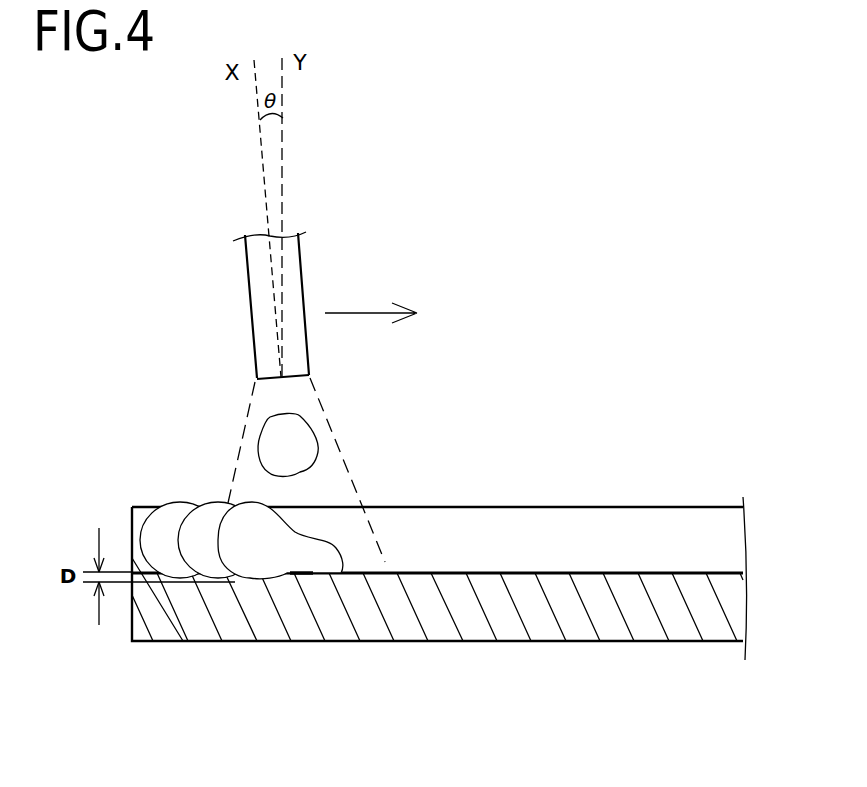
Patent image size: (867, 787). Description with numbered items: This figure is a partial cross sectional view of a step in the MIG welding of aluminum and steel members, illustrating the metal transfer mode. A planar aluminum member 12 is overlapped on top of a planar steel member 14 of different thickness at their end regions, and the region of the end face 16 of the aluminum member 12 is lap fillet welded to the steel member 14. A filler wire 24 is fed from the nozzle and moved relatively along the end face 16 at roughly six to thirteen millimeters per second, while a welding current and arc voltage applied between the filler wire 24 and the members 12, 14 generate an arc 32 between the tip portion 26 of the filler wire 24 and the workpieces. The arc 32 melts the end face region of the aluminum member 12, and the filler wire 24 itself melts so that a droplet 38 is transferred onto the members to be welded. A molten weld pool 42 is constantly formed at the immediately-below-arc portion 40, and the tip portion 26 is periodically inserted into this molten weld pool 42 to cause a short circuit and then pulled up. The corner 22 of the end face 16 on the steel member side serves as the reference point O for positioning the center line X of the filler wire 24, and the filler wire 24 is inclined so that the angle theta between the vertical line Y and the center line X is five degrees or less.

The aluminum member 12 is at (645, 495).
The steel member 14 is at (638, 655).
The end face 16 is at (548, 545).
The corner 22 is at (459, 573).
The filler wire 24 is at (262, 284).
The tip portion 26 is at (287, 378).
The arc 32 is at (250, 403).
The droplet 38 is at (293, 450).
The immediately-below-arc portion 40 is at (312, 577).
The molten weld pool 42 is at (275, 553).